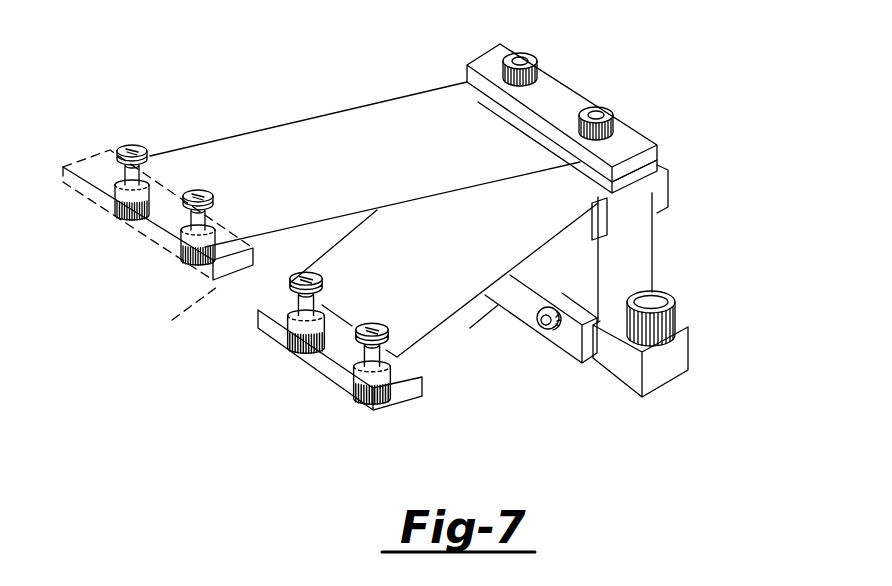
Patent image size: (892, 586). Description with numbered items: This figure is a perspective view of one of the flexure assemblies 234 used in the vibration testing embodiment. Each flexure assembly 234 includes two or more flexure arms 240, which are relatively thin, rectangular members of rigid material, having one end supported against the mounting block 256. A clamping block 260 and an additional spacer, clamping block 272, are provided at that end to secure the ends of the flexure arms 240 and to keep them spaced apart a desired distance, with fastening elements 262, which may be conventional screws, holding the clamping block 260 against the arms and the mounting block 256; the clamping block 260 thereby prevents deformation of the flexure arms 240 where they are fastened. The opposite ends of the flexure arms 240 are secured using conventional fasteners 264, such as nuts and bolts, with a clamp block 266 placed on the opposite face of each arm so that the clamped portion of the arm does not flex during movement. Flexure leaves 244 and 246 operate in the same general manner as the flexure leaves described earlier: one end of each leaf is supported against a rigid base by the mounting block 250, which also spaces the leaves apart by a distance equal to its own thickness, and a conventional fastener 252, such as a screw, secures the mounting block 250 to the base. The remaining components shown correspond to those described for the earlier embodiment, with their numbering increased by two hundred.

The flexure assembly 234 is at (633, 72).
The flexure arm 240 is at (286, 134).
The flexure leaf 244 is at (647, 258).
The flexure leaf 246 is at (546, 335).
The mounting block 250 is at (675, 360).
The fastener 252 is at (675, 302).
The mounting block 256 is at (586, 297).
The clamping block 260 is at (559, 97).
The fastening element 262 is at (517, 54).
The fastener 264 is at (131, 145).
The clamp block 266 is at (668, 188).
The clamping block 272 is at (652, 166).